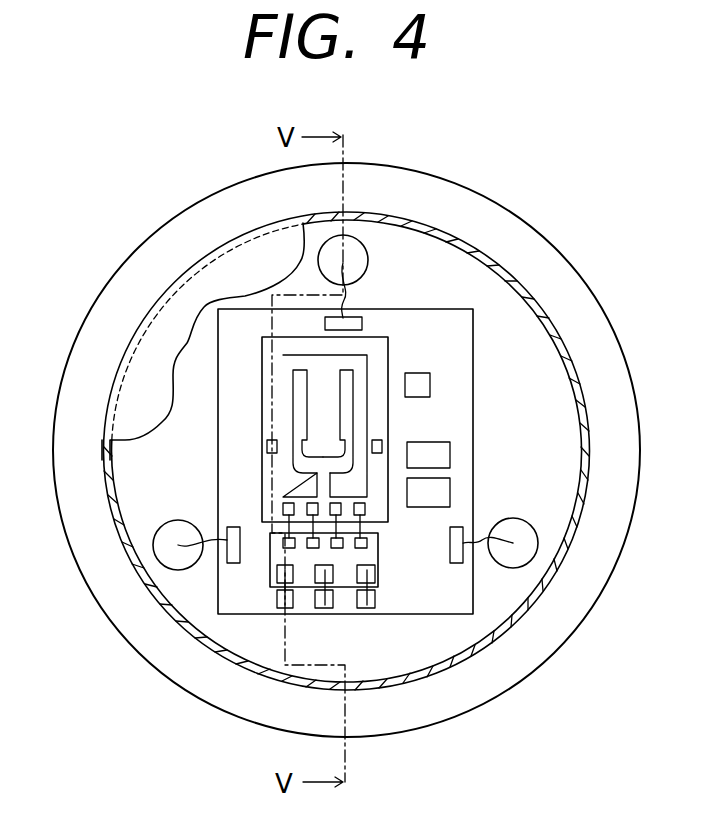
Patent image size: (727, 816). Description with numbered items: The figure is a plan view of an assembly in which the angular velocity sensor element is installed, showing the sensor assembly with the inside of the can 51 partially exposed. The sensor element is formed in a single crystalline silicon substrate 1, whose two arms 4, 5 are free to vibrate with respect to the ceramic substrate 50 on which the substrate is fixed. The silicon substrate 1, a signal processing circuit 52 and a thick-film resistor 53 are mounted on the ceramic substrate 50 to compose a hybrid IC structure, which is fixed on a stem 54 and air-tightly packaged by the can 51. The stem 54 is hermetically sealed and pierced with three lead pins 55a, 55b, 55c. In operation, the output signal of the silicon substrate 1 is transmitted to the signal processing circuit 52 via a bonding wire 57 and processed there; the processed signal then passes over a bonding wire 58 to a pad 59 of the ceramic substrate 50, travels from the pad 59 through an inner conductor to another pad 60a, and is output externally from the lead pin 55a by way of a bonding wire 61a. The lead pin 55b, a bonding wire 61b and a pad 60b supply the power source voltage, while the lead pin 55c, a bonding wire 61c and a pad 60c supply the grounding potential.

The single crystalline silicon substrate 1 is at (389, 358).
The arm 4 is at (293, 405).
The arm 5 is at (352, 412).
The ceramic substrate 50 is at (467, 469).
The can 51 is at (273, 242).
The signal processing circuit 52 is at (380, 551).
The thick-film resistor 53 is at (450, 443).
The stem 54 is at (565, 505).
The lead pin 55a is at (345, 262).
The lead pin 55b is at (537, 552).
The lead pin 55c is at (161, 562).
The bonding wire 57 is at (307, 516).
The bonding wire 58 is at (290, 585).
The pad 59 is at (283, 601).
The pad 60a is at (363, 323).
The pad 60b is at (462, 564).
The pad 60c is at (237, 564).
The bonding wire 61a is at (347, 294).
The bonding wire 61b is at (489, 535).
The bonding wire 61c is at (211, 533).